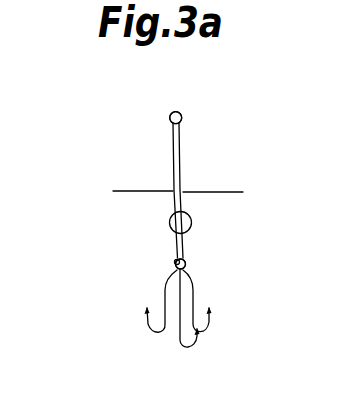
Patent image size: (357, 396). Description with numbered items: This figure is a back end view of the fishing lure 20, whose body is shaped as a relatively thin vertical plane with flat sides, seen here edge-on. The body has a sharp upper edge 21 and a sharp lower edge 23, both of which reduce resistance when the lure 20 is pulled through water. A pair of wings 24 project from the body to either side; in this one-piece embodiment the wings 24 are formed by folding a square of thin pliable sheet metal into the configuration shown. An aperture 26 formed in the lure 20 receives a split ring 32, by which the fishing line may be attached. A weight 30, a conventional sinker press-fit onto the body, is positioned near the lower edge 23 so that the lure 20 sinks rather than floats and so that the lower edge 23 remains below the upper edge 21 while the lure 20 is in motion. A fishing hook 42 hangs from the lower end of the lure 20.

The fishing lure 20 is at (146, 155).
The upper edge 21 is at (173, 112).
The lower edge 23 is at (176, 270).
The wings 24 is at (130, 190).
The aperture 26 is at (182, 124).
The weight 30 is at (169, 222).
The split ring 32 is at (180, 113).
The treble hook 42 is at (193, 296).